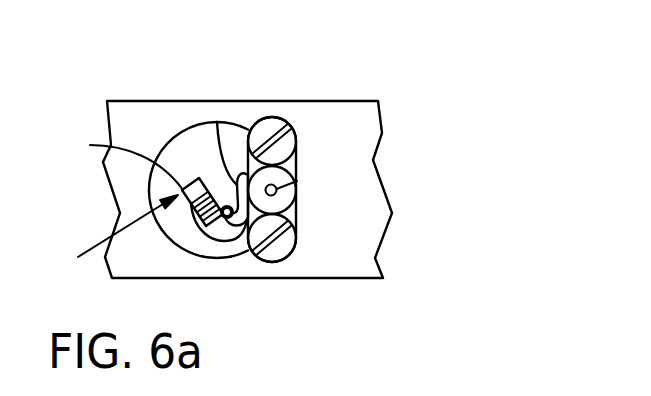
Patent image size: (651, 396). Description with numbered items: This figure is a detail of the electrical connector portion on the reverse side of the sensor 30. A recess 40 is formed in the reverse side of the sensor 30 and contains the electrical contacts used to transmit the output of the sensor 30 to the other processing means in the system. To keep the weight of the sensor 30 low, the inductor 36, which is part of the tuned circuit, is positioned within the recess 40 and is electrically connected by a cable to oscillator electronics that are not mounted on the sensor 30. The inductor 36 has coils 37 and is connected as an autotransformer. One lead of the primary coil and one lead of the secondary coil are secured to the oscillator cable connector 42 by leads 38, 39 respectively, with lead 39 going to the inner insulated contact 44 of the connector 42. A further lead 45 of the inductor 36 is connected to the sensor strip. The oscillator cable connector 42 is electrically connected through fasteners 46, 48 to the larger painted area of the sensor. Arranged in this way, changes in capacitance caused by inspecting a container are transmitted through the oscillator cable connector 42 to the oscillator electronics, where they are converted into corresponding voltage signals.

The sensor 30 is at (352, 100).
The inductor 36 is at (111, 234).
The coils 37 is at (207, 227).
The lead 38 is at (217, 122).
The lead 39 is at (219, 232).
The recess 40 is at (180, 128).
The oscillator cable connector 42 is at (289, 197).
The inner insulated contact 44 is at (297, 181).
The lead 45 is at (122, 162).
The fastener 46 is at (266, 128).
The fastener 48 is at (277, 252).